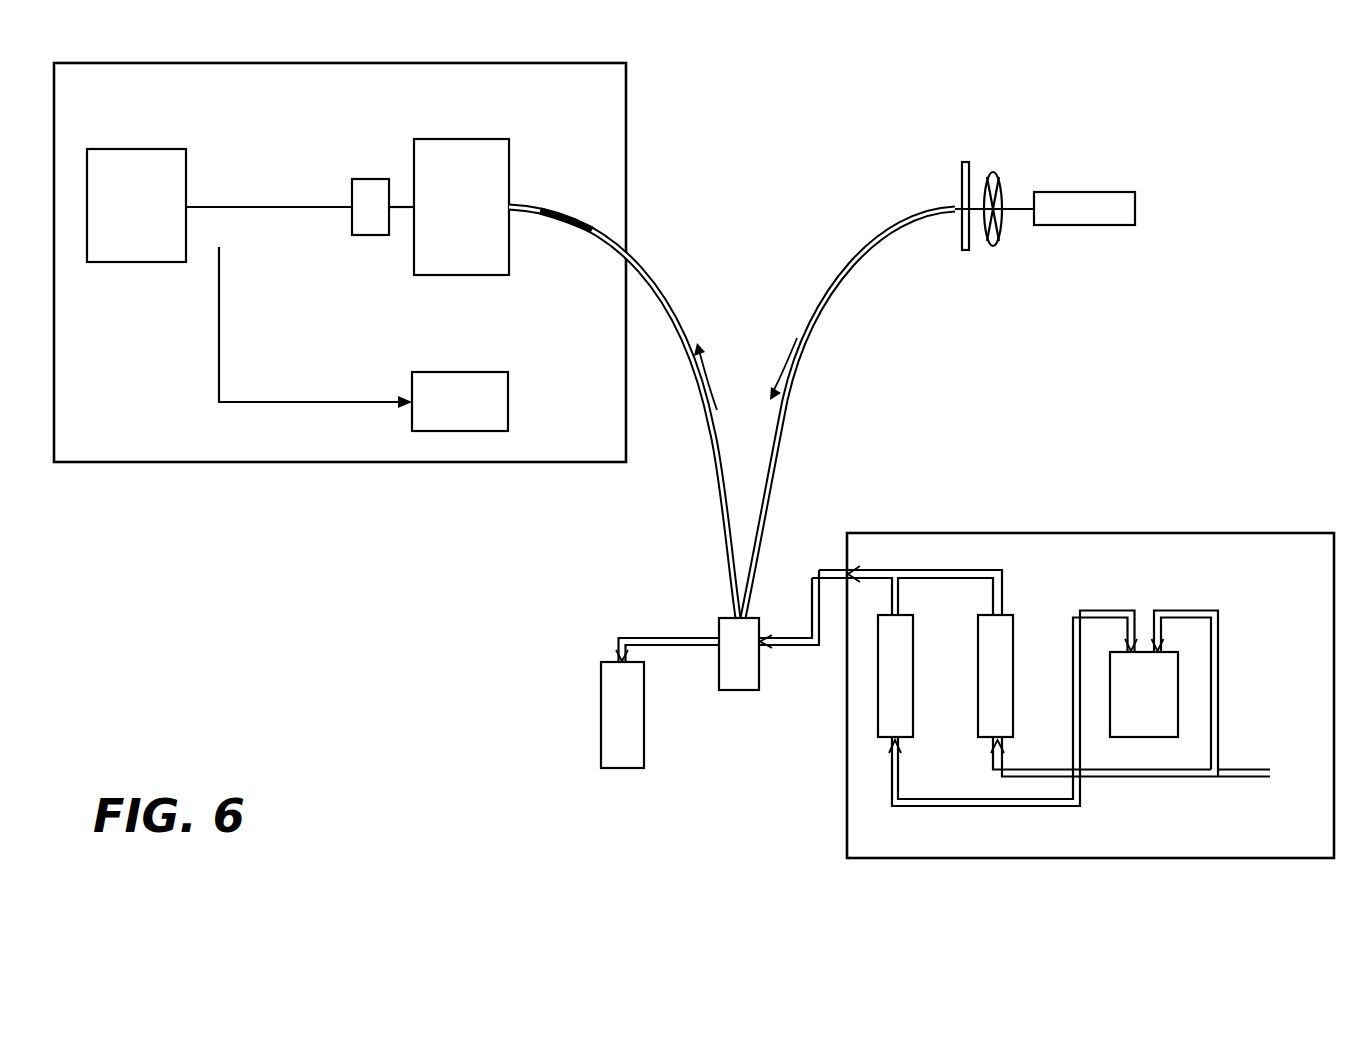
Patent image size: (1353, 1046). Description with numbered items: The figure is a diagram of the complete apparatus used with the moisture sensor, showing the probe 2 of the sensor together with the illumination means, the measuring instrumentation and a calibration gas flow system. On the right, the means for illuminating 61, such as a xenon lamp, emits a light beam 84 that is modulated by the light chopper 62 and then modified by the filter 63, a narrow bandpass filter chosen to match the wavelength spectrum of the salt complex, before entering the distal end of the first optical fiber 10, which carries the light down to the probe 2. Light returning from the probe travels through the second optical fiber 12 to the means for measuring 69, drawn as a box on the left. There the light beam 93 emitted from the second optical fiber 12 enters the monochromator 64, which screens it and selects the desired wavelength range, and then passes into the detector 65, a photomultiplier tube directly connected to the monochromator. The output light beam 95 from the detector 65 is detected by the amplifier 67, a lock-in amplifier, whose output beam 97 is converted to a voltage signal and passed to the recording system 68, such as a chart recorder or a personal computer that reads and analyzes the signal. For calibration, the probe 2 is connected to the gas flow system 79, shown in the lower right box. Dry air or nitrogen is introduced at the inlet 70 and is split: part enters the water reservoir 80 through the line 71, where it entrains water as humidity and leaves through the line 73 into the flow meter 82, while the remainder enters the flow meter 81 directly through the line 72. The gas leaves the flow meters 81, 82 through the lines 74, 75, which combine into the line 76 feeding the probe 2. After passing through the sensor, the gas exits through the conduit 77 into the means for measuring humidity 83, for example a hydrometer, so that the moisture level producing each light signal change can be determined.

The probe 2 is at (738, 690).
The first optical fiber 10 is at (767, 480).
The second optical fiber 12 is at (722, 491).
The means for illuminating 61 is at (1136, 208).
The light chopper 62 is at (996, 174).
The filter 63 is at (963, 160).
The monochromator 64 is at (478, 138).
The detector 65 is at (365, 178).
The amplifier 67 is at (128, 148).
The recording system 68 is at (510, 380).
The means for measuring 69 is at (209, 463).
The inlet 70 is at (1153, 763).
The line 71 is at (1221, 670).
The line 72 is at (1135, 778).
The line 73 is at (940, 807).
The line 74 is at (1005, 575).
The line 75 is at (902, 606).
The line 76 is at (810, 646).
The exhaust conduit 77 is at (668, 638).
The gas flow system 79 is at (1088, 842).
The water reservoir 80 is at (1144, 694).
The flow meter 81 is at (977, 700).
The flow meter 82 is at (913, 630).
The means for measuring humidity 83 is at (600, 722).
The light beam 84 is at (1017, 211).
The light beam 93 is at (405, 210).
The output light beam 95 is at (241, 206).
The light beam 97 is at (277, 402).